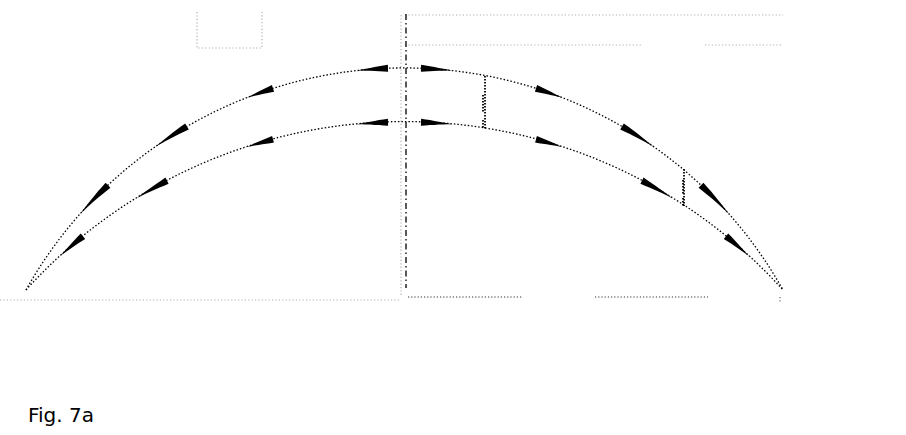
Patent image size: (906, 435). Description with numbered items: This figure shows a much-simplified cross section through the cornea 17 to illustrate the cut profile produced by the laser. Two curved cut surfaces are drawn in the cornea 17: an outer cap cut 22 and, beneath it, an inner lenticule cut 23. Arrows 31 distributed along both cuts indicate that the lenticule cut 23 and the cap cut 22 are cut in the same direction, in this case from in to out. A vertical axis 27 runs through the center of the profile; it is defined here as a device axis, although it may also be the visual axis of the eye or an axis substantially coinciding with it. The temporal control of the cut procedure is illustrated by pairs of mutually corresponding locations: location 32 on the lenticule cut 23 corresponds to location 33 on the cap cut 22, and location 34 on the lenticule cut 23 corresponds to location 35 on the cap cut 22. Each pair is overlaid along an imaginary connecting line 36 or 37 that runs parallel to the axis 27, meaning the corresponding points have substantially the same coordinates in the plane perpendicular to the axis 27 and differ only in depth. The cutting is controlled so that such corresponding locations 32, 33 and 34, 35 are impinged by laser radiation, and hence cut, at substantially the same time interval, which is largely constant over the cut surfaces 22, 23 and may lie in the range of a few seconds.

The cornea 17 is at (170, 213).
The cap cut 22 is at (600, 115).
The lenticule cut 23 is at (208, 160).
The axis 27 is at (410, 258).
The arrows 31 is at (163, 143).
The location 32 is at (485, 128).
The location 33 is at (485, 77).
The location 34 is at (684, 206).
The location 35 is at (685, 168).
The connecting line 36 is at (485, 104).
The connecting line 37 is at (690, 185).